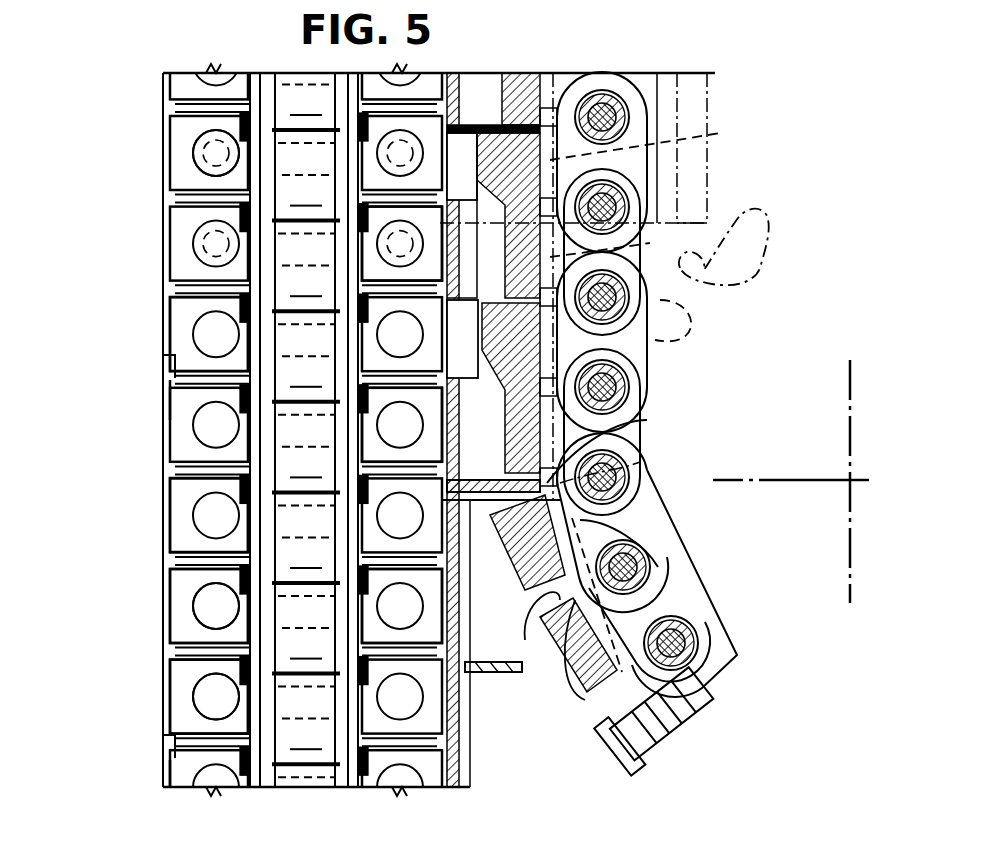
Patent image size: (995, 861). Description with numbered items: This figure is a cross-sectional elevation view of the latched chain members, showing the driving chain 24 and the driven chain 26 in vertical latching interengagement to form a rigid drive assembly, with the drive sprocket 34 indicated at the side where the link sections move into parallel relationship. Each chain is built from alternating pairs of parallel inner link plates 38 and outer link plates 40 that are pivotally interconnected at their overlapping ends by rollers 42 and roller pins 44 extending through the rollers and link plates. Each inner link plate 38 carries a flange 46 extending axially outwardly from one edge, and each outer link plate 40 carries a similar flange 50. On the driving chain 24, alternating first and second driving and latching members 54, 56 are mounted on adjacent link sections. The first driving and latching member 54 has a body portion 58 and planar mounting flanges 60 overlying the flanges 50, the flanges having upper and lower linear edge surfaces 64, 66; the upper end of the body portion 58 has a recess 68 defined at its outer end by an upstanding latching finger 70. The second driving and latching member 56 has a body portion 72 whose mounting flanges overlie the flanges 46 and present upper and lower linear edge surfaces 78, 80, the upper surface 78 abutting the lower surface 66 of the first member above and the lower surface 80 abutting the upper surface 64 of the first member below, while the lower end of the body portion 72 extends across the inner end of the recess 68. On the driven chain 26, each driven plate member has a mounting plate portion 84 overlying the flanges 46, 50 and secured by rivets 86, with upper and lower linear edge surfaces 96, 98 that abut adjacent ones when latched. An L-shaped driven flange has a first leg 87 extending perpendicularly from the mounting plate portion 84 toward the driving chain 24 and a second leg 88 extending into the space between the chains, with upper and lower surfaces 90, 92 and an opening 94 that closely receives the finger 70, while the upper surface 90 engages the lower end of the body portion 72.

The driving chain 24 is at (660, 295).
The driven chain 26 is at (163, 243).
The drive sprocket 34 is at (752, 218).
The inner link plates 38 is at (340, 150).
The outer link plates 40 is at (355, 270).
The rollers 42 is at (302, 95).
The roller pins 44 is at (170, 113).
The flange 46 is at (183, 178).
The flange 50 is at (185, 228).
The first driving and latching member 54 is at (447, 596).
The second driving and latching member 56 is at (588, 705).
The body portion 58 is at (458, 90).
The planar mounting flanges 60 is at (690, 137).
The upper linear edge surface 64 is at (610, 475).
The lower linear edge surface 66 is at (632, 580).
The recess 68 is at (603, 452).
The latching finger 70 is at (520, 105).
The body portion 72 is at (490, 230).
The upper linear edge surface 78 is at (540, 605).
The lower linear edge surface 80 is at (680, 705).
The mounting plate portion 84 is at (178, 642).
The rivets 86 is at (215, 605).
The first leg 87 is at (490, 325).
The second leg 88 is at (632, 358).
The upper surface 90 is at (467, 662).
The lower surface 92 is at (517, 682).
The opening 94 is at (478, 115).
The upper linear edge surface 96 is at (172, 368).
The lower linear edge surface 98 is at (185, 395).